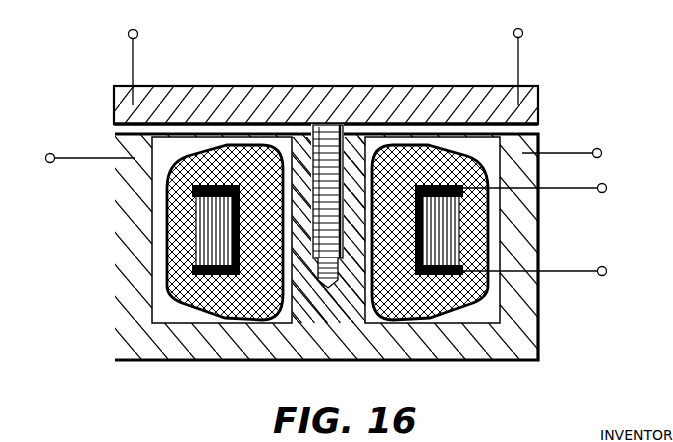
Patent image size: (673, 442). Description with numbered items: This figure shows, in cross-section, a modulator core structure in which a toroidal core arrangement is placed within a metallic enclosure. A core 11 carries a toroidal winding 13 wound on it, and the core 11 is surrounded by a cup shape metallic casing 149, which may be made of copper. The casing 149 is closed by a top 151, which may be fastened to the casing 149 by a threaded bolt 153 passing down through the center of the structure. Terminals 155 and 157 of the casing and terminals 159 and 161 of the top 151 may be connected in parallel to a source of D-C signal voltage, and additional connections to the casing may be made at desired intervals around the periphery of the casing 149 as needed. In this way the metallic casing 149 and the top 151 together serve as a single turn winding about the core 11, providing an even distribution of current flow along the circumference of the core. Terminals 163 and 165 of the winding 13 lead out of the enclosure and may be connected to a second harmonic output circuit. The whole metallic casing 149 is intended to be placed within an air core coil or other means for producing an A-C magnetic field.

The core 11 is at (447, 213).
The toroidal winding 13 is at (183, 300).
The cup shape metallic casing 149 is at (115, 290).
The top 151 is at (362, 86).
The threaded bolt 153 is at (306, 150).
The terminal 155 is at (47, 155).
The terminal 157 is at (601, 150).
The terminal 159 is at (128, 34).
The terminal 161 is at (514, 30).
The terminal 163 is at (606, 188).
The terminal 165 is at (606, 274).